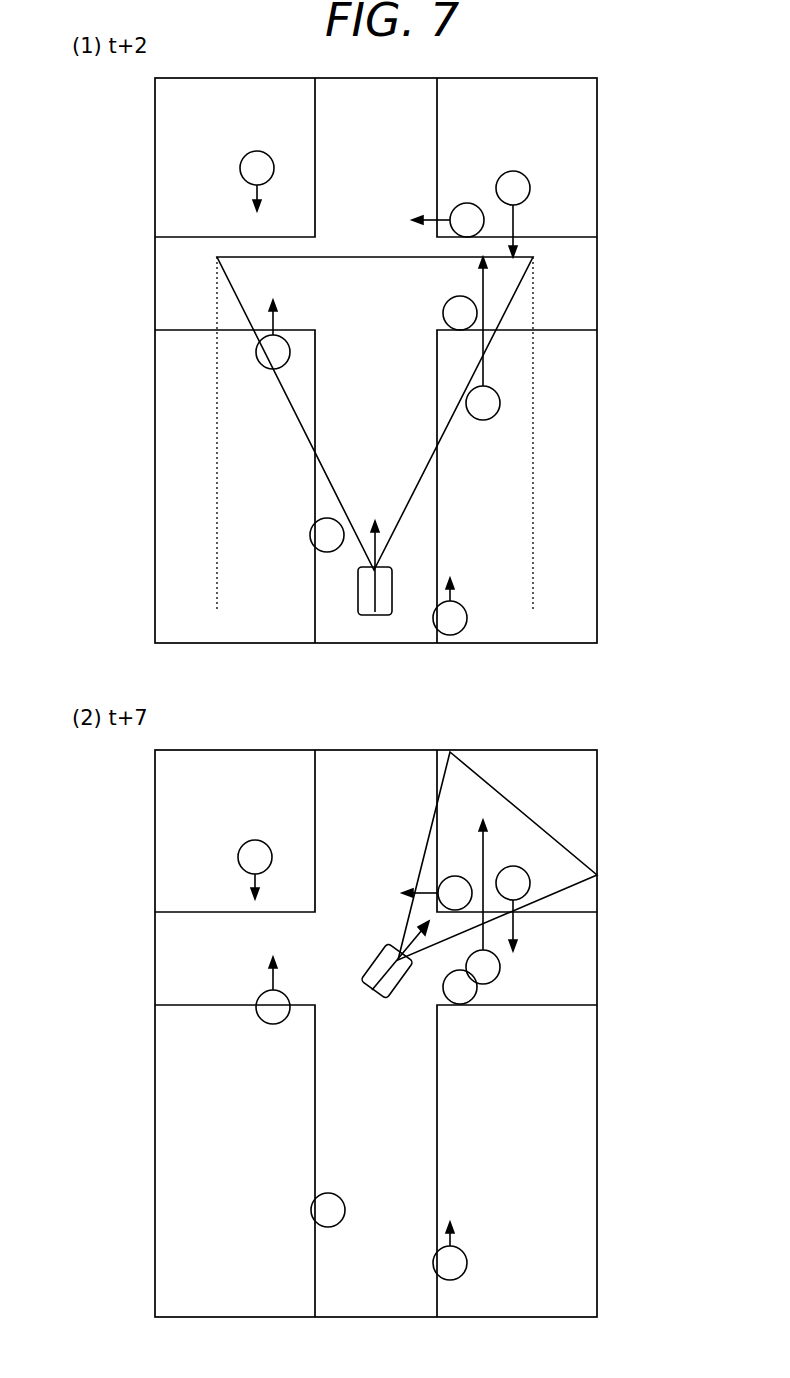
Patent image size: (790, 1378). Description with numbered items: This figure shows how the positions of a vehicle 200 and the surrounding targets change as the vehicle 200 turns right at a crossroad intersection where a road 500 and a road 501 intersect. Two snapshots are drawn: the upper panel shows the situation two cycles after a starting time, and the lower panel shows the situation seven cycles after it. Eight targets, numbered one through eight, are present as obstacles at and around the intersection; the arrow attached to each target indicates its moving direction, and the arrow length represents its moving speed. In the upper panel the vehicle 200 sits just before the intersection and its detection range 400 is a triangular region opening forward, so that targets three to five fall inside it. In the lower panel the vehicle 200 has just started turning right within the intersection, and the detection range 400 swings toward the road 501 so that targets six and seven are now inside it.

The vehicle 200 is at (358, 595).
The detection range 400 is at (298, 424).
The road 500 is at (412, 543).
The road 501 is at (564, 318).